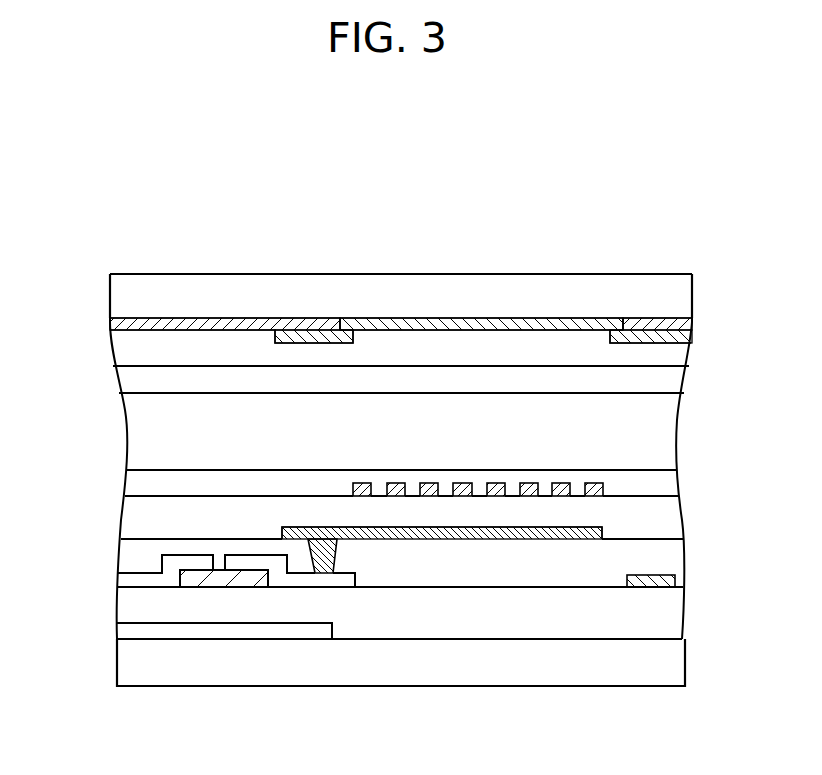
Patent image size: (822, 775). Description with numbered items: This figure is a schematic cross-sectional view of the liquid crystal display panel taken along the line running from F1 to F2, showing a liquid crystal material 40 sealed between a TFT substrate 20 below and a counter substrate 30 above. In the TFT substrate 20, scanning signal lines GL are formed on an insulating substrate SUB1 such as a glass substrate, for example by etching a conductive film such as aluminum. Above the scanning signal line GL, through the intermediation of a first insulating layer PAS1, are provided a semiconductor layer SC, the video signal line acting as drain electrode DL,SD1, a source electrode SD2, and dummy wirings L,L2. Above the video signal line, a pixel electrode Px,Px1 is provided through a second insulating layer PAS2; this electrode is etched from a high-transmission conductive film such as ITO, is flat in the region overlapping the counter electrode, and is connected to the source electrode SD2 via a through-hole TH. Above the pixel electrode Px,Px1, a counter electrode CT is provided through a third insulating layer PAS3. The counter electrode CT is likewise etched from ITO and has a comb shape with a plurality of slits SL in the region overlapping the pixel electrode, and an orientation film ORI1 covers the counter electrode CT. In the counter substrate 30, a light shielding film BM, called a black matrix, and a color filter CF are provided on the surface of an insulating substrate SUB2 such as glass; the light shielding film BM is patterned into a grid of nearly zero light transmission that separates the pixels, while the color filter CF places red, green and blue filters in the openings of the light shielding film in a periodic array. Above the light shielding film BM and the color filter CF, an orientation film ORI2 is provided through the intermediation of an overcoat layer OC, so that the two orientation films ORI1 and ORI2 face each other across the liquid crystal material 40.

The light shielding film BM is at (190, 327).
The insulating substrate SUB2 is at (355, 293).
The color filter CF is at (485, 325).
The overcoat layer OC is at (664, 356).
The orientation film ORI2 is at (664, 384).
The orientation film ORI1 is at (664, 490).
The third insulating layer PAS3 is at (664, 524).
The second insulating layer PAS2 is at (664, 559).
The first insulating layer PAS1 is at (664, 625).
The dummy wiring L,L2 is at (664, 587).
The pixel electrode Px,Px1 is at (308, 535).
The through-hole TH is at (335, 555).
The counter electrode CT is at (522, 482).
The slit SL is at (553, 482).
The video signal line (drain electrode) DL,SD1 is at (147, 582).
The source electrode SD2 is at (307, 580).
The semiconductor layer SC is at (243, 580).
The scanning signal line GL is at (183, 634).
The insulating substrate SUB1 is at (430, 668).
The section line end F1 is at (117, 688).
The section line end F2 is at (689, 689).
The counter substrate 30 is at (83, 275).
The liquid crystal material 40 is at (83, 388).
The TFT substrate 20 is at (83, 467).